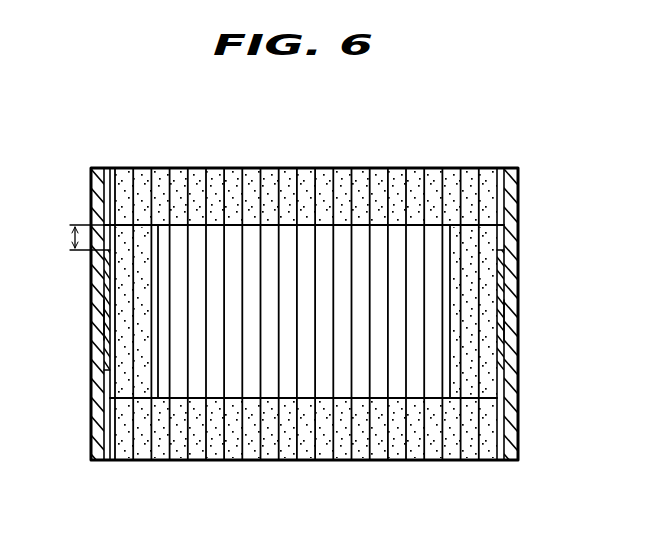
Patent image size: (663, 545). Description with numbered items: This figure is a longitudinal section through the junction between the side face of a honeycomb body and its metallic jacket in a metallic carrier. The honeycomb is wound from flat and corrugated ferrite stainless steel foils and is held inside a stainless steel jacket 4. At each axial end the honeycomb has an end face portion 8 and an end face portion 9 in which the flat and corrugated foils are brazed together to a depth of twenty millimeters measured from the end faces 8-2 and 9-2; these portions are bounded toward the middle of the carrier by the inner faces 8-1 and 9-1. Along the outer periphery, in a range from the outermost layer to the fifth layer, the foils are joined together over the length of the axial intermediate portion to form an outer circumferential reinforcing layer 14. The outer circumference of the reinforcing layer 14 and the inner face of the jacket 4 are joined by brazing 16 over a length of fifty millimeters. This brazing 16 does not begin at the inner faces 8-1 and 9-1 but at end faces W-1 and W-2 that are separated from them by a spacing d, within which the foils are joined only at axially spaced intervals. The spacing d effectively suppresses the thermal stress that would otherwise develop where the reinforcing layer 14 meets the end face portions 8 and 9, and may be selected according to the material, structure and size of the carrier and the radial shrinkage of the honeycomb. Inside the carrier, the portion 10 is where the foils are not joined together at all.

The jacket 4 is at (96, 203).
The outer circumferential reinforcing layer 14 is at (122, 275).
The brazing 16 is at (105, 322).
The spacing d is at (84, 237).
The end face of the brazing W-1 is at (500, 242).
The end face of the brazing W-2 is at (102, 392).
The end face portion 8 is at (345, 188).
The inner face of the end face portion 8-1 is at (273, 226).
The end face 8-2 is at (416, 172).
The portion where the foils are not joined 10 is at (263, 302).
The end face portion 9 is at (362, 450).
The inner face of the end face portion 9-1 is at (255, 398).
The end face 9-2 is at (295, 460).